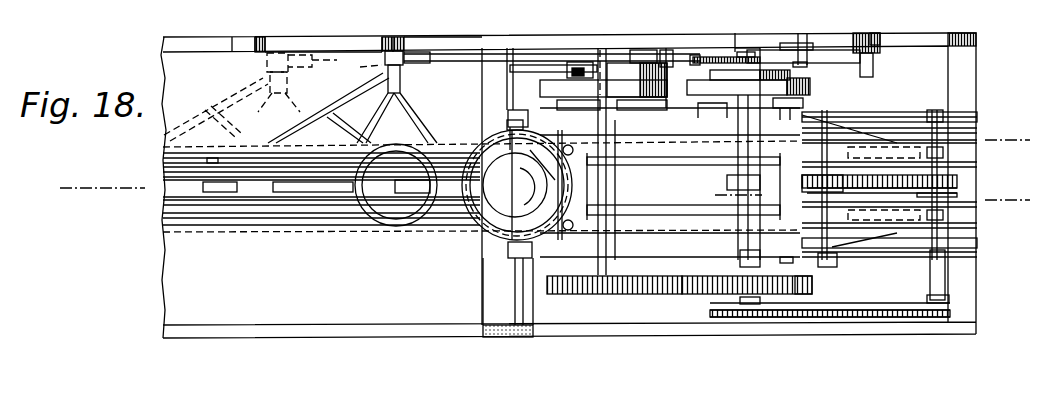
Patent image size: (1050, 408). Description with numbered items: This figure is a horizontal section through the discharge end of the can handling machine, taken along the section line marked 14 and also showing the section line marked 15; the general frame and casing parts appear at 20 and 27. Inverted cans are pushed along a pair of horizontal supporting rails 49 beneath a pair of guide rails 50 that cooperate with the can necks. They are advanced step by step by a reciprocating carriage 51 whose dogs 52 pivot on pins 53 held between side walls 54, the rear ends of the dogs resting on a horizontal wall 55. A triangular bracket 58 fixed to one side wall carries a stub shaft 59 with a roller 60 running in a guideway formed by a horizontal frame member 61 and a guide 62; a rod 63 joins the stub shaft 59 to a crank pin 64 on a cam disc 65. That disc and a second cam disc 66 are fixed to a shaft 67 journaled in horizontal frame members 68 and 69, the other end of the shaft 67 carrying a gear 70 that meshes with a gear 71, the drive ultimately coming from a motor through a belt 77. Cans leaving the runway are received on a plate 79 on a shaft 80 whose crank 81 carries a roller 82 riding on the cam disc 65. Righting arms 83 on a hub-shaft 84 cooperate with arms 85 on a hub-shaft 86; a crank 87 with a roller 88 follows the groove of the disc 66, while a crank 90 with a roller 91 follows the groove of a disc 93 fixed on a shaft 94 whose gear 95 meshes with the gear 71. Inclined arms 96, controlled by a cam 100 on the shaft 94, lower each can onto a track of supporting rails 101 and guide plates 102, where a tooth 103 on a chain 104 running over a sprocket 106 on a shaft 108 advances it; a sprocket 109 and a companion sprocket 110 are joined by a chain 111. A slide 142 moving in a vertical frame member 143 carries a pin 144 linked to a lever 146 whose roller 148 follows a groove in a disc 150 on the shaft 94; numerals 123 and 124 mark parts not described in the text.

The section line 14 is at (72, 168).
The section line 15 is at (1034, 189).
The tube 20 is at (397, 227).
The frame 27 is at (450, 18).
The supporting rails 49 is at (166, 164).
The guide rails 50 is at (211, 147).
The reciprocating carriage 51 is at (321, 214).
The dogs 52 is at (220, 193).
The pins 53 is at (208, 206).
The side walls 54 is at (268, 135).
The horizontal wall 55 is at (278, 103).
The bracket 58 is at (336, 88).
The stub shaft 59 is at (376, 65).
The roller 60 is at (390, 36).
The horizontal frame member 61 is at (305, 48).
The guide 62 is at (259, 36).
The rod 63 is at (429, 62).
The crank pin 64 is at (660, 52).
The cam disc 65 is at (645, 63).
The cam disc 66 is at (628, 95).
The shaft 67 is at (606, 178).
The horizontal frame member 68 is at (676, 126).
The horizontal frame member 69 is at (676, 252).
The gear 70 is at (578, 298).
The gear 71 is at (676, 298).
The belt 77 is at (680, 179).
The plate 79 is at (508, 241).
The shaft 80 is at (507, 101).
The crank 81 is at (540, 65).
The roller 82 is at (580, 62).
The arms 83 is at (519, 185).
The hub-shaft 84 is at (570, 165).
The arms 85 is at (649, 205).
The hub-shaft 86 is at (793, 263).
The crank 87 is at (588, 98).
The roller 88 is at (608, 50).
The crank 90 is at (805, 105).
The roller 91 is at (808, 100).
The disc 93 is at (810, 88).
The shaft 94 is at (755, 311).
The gear 95 is at (812, 286).
The upwardly inclined arms 96 is at (895, 205).
The cam 100 is at (727, 182).
The supporting rails 101 is at (975, 142).
The guide plates 102 is at (978, 117).
The tooth 103 is at (848, 130).
The chain 104 is at (957, 178).
The sprocket 106 is at (957, 183).
The shaft 108 is at (947, 295).
The sprocket 109 is at (950, 305).
The sprocket 110 is at (736, 311).
The chain 111 is at (835, 318).
The gear 123 is at (702, 56).
The shaft 124 is at (740, 48).
The slide 142 is at (879, 40).
The vertical frame member 143 is at (863, 34).
The pin 144 is at (873, 74).
The lever 146 is at (810, 55).
The roller 148 is at (788, 43).
The disc 150 is at (747, 52).